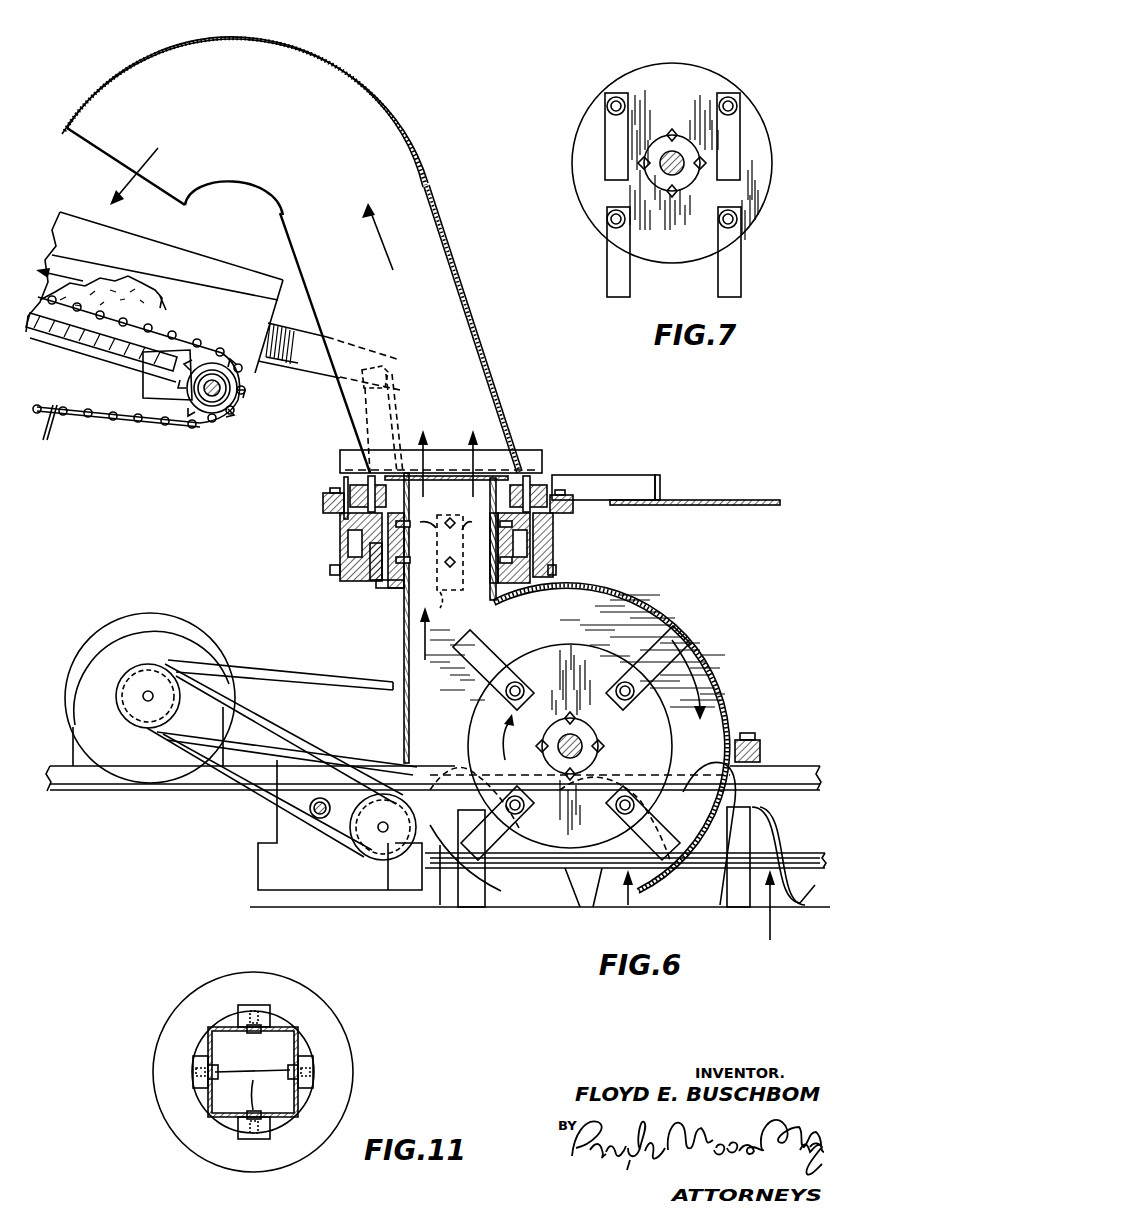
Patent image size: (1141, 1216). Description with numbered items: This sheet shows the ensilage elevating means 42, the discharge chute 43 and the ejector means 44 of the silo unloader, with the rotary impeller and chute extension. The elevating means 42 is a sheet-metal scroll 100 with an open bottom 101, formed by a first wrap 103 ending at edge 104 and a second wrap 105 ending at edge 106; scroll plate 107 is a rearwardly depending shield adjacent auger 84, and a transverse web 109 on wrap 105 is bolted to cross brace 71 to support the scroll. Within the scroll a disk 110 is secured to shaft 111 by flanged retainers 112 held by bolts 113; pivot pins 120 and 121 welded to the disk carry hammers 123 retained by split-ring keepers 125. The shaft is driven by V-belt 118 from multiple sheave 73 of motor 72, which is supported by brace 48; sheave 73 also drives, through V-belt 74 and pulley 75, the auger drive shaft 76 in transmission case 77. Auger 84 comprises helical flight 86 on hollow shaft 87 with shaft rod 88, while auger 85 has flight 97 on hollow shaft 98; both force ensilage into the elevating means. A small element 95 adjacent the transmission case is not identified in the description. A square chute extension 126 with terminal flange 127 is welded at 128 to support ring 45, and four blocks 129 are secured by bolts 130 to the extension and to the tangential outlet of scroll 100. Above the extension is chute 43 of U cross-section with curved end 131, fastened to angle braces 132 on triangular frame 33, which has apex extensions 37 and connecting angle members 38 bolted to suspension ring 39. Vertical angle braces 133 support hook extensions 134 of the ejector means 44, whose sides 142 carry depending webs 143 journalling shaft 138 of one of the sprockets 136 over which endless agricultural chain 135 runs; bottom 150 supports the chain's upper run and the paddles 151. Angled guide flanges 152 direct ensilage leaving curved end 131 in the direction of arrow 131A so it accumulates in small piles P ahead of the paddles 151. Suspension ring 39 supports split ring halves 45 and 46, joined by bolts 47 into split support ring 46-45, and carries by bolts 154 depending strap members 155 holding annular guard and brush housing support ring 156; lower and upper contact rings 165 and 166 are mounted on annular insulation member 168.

In FIG. 6, the frame 33 is at (630, 468).
In FIG. 6, the apex extensions 37 is at (772, 500).
In FIG. 6, the connecting angle members 38 is at (343, 482).
In FIG. 6, the suspension ring 39 is at (323, 503).
In FIG. 6, the elevating means 42 is at (635, 637).
In FIG. 6, the discharge chute 43 is at (449, 257).
In FIG. 6, the ejector means 44 is at (190, 250).
In FIG. 6, the split support ring half 45 is at (348, 540).
In FIG. 6, the split ring half 46 is at (546, 484).
In FIG. 6, the bolts 47 is at (370, 478).
In FIG. 6, the brace 48 is at (55, 792).
In FIG. 6, the cross brace 71 is at (760, 745).
In FIG. 6, the motor 72 is at (133, 612).
In FIG. 6, the multiple sleeved pulley 73 is at (130, 694).
In FIG. 6, the V-belt 74 is at (175, 752).
In FIG. 6, the pulley 75 is at (392, 895).
In FIG. 6, the auger drive shaft 76 is at (378, 832).
In FIG. 6, the transmission case 77 is at (277, 826).
In FIG. 6, the auger 84 is at (765, 922).
In FIG. 6, the auger 85 is at (630, 900).
In FIG. 6, the helical flight 86 is at (805, 895).
In FIG. 6, the hollow shaft 87 is at (810, 852).
In FIG. 6, the shaft rod 88 is at (440, 908).
In FIG. 6, the pivot bolt 95 is at (316, 818).
In FIG. 6, the flight 97 is at (705, 885).
In FIG. 6, the hollow shaft 98 is at (582, 833).
In FIG. 6, the scroll 100 is at (402, 658).
In FIG. 6, the open bottom 101 is at (525, 908).
In FIG. 6, the first wrap 103 is at (404, 736).
In FIG. 6, the edge 104 is at (470, 908).
In FIG. 6, the second wrap 105 is at (732, 690).
In FIG. 6, the edge 106 is at (745, 786).
In FIG. 6, the scroll plate 107 is at (585, 910).
In FIG. 6, the transverse web 109 is at (752, 740).
In FIG. 6, the disk 110 is at (485, 722).
In FIG. 7, the disk 110 is at (692, 62).
In FIG. 6, the shaft 111 is at (583, 743).
In FIG. 7, the shaft 111 is at (662, 172).
In FIG. 6, the flanged retainers 112 is at (548, 752).
In FIG. 7, the flanged retainers 112 is at (665, 193).
In FIG. 6, the bolts 113 is at (565, 716).
In FIG. 7, the bolts 113 is at (700, 155).
In FIG. 6, the V-belt 118 is at (263, 672).
In FIG. 6, the pivot pins 120 is at (522, 684).
In FIG. 7, the pivot pins 120 is at (613, 97).
In FIG. 6, the pivot pins 121 is at (627, 700).
In FIG. 7, the pivot pins 121 is at (735, 100).
In FIG. 6, the hammers 123 is at (470, 648).
In FIG. 7, the hammers 123 is at (612, 145).
In FIG. 7, the split rings 125 is at (618, 230).
In FIG. 6, the square chute extension 126 is at (483, 480).
In FIG. 11, the square chute extension 126 is at (300, 1046).
In FIG. 6, the terminal flange 127 is at (520, 452).
In FIG. 11, the welds 128 is at (272, 1010).
In FIG. 6, the blocks 129 is at (410, 585).
In FIG. 11, the blocks 129 is at (208, 1068).
In FIG. 6, the bolts 130 is at (416, 525).
In FIG. 11, the bolts 130 is at (252, 1086).
In FIG. 6, the curved end 131 is at (134, 66).
In FIG. 6, the arrow 131A is at (157, 156).
In FIG. 6, the angle braces 132 is at (540, 455).
In FIG. 6, the vertical angle brace 133 is at (400, 410).
In FIG. 6, the hook extensions 134 is at (312, 366).
In FIG. 6, the endless flat agricultural chain 135 is at (128, 425).
In FIG. 6, the sprockets 136 is at (193, 405).
In FIG. 6, the shaft 138 is at (212, 397).
In FIG. 6, the sides 142 is at (242, 295).
In FIG. 6, the depending webs 143 is at (143, 386).
In FIG. 6, the bottom 150 is at (44, 330).
In FIG. 6, the paddles 151 is at (176, 300).
In FIG. 6, the angled guide flanges 152 is at (137, 245).
In FIG. 6, the bolts 154 is at (340, 520).
In FIG. 6, the depending strap members 155 is at (347, 536).
In FIG. 6, the annular guard and brush housing support ring 156 is at (330, 562).
In FIG. 6, the contact ring 165 is at (360, 580).
In FIG. 6, the contact ring 166 is at (552, 552).
In FIG. 6, the annular insulation member 168 is at (385, 590).
In FIG. 6, the piles P is at (103, 290).
In FIG. 11, the split support ring 46-45 is at (345, 1089).